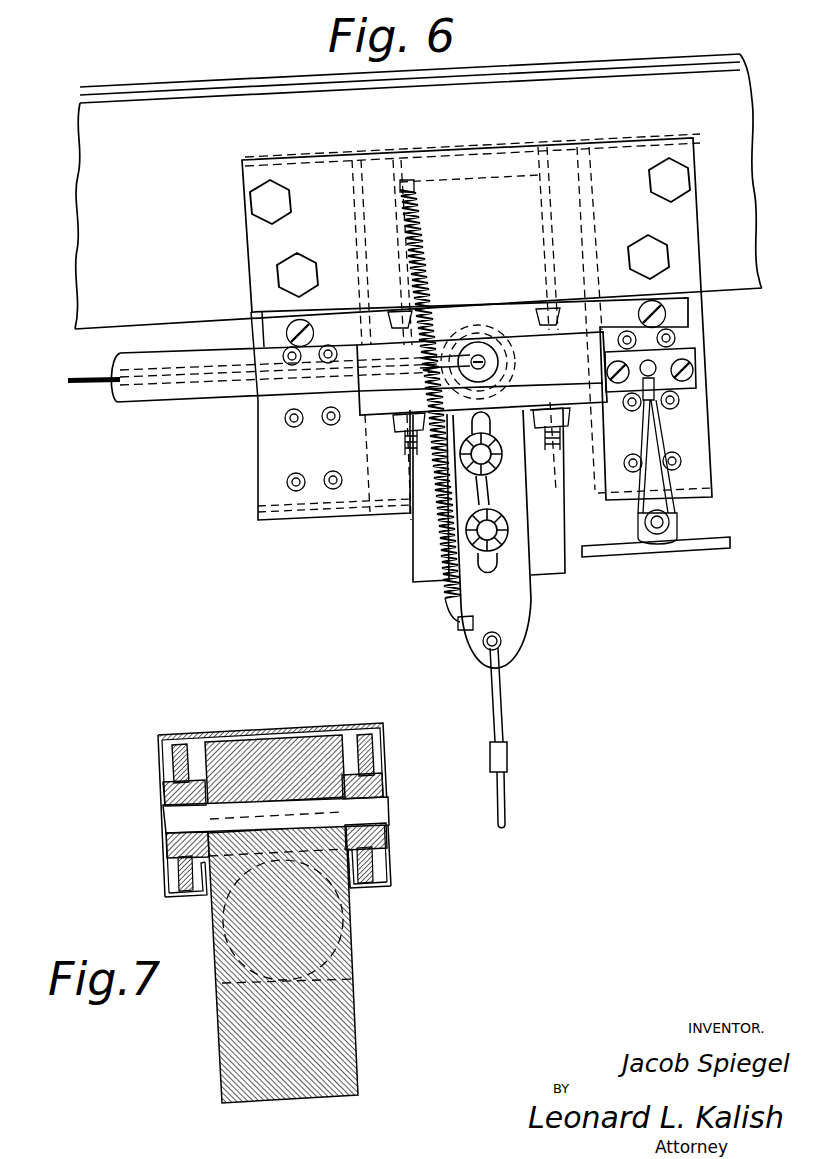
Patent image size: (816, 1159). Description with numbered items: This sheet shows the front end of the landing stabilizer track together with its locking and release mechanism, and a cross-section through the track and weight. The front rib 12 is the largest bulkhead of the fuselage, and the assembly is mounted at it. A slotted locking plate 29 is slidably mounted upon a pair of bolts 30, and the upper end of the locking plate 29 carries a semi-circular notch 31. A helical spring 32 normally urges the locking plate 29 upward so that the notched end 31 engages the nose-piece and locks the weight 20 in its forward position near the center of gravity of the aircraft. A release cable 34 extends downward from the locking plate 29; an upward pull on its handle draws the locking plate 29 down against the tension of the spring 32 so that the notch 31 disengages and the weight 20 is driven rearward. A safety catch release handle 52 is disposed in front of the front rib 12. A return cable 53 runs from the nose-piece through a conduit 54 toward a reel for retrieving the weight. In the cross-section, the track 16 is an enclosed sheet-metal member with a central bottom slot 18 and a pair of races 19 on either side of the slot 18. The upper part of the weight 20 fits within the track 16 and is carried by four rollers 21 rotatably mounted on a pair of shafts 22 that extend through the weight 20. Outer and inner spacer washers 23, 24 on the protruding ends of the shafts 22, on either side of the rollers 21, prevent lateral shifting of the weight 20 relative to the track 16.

In FIG. 6, the front rib 12 is at (82, 212).
In FIG. 6, the return cable 53 is at (87, 384).
In FIG. 6, the conduit 54 is at (170, 392).
In FIG. 6, the semi-circular notch 31 is at (494, 375).
In FIG. 6, the helical spring 32 is at (440, 523).
In FIG. 6, the bolts 30 is at (508, 533).
In FIG. 6, the slotted locking plate 29 is at (510, 600).
In FIG. 6, the safety catch release handle 52 is at (702, 542).
In FIG. 6, the release cable 34 is at (506, 796).
In FIG. 7, the track 16 is at (338, 704).
In FIG. 7, the weight 20 is at (237, 1021).
In FIG. 7, the shafts 22 is at (382, 807).
In FIG. 7, the rollers 21 is at (183, 752).
In FIG. 7, the outer spacer washers 23 is at (165, 797).
In FIG. 7, the inner spacer washers 24 is at (177, 776).
In FIG. 7, the races 19 is at (167, 888).
In FIG. 7, the slot 18 is at (350, 878).